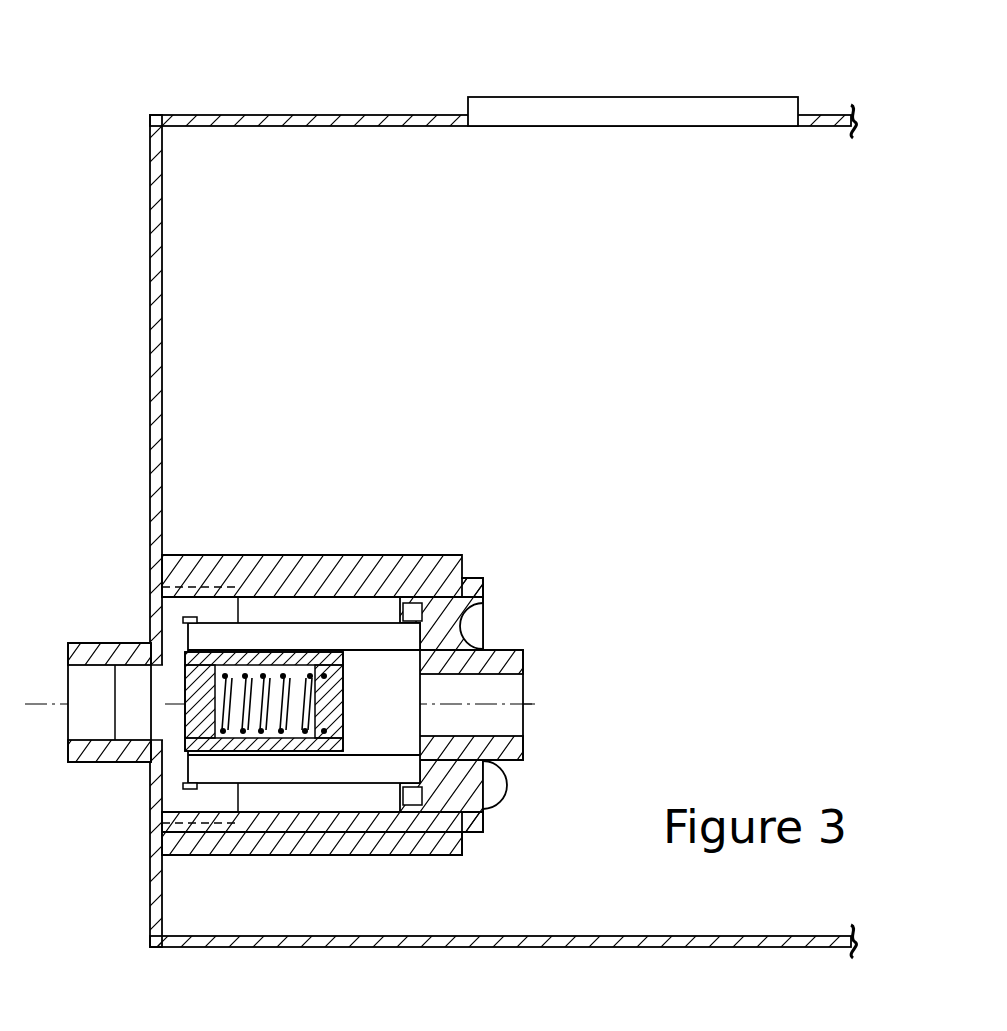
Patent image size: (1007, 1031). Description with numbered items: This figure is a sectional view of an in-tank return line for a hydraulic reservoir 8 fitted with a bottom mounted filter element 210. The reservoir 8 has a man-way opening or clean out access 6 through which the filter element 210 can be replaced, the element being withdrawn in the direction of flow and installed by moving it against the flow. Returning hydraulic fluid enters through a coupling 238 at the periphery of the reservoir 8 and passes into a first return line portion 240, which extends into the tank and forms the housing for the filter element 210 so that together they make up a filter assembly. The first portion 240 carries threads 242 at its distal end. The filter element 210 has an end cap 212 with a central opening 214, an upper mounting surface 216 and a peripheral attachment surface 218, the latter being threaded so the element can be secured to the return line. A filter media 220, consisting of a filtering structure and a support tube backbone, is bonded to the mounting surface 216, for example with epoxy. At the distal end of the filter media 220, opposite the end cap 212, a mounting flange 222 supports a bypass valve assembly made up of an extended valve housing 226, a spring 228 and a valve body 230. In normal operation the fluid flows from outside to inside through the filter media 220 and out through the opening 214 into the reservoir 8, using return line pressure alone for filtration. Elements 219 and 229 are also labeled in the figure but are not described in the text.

The clean out access 6 is at (503, 93).
The hydraulic reservoir 8 is at (313, 123).
The filter element 210 is at (401, 674).
The end cap 212 is at (462, 764).
The central opening 214 is at (516, 697).
The upper mounting surface 216 is at (428, 623).
The peripheral attachment surface 218 is at (452, 826).
The flange 219 is at (464, 578).
The filter media 220 is at (303, 623).
The mounting flange 222 is at (190, 620).
The extended valve housing 226 is at (277, 735).
The spring 228 is at (257, 735).
The chamber 229 is at (354, 742).
The valve body 230 is at (205, 735).
The coupling 238 is at (115, 762).
The first return line portion 240 is at (370, 555).
The threads 242 is at (482, 583).